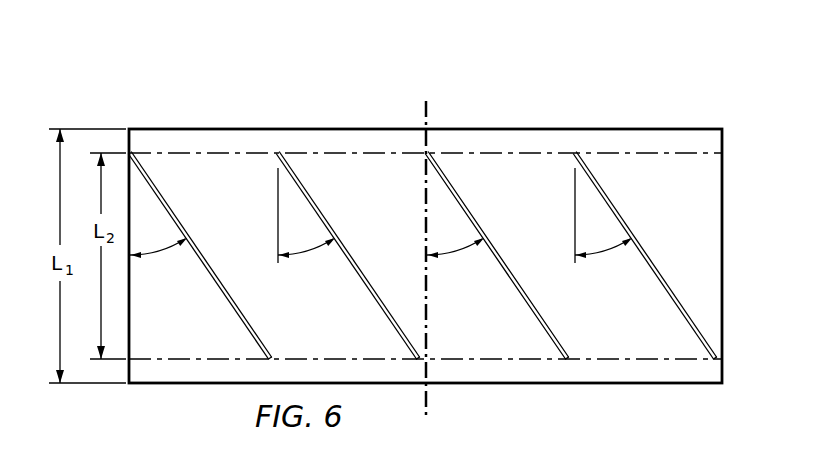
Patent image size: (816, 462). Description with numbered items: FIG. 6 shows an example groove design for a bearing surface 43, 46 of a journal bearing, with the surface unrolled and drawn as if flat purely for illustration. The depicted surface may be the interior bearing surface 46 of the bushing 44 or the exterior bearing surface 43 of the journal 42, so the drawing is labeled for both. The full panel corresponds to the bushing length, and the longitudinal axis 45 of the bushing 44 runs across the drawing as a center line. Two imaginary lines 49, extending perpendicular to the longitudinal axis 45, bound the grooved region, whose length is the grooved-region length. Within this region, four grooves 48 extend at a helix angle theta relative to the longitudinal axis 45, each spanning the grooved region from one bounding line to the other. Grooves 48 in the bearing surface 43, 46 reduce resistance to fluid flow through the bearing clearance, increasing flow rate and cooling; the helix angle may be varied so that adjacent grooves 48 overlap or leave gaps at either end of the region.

The journal 42 is at (425, 207).
The bushing 44 is at (226, 85).
The exterior bearing surface 43 is at (381, 253).
The interior bearing surface 46 is at (507, 338).
The longitudinal axis 45 is at (425, 112).
The grooves 48 is at (210, 262).
The imaginary lines 49 is at (638, 152).